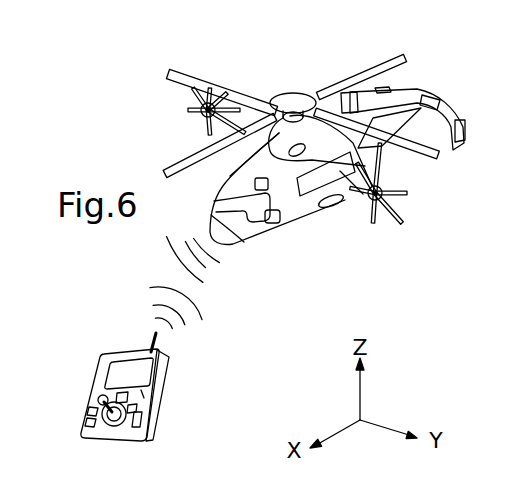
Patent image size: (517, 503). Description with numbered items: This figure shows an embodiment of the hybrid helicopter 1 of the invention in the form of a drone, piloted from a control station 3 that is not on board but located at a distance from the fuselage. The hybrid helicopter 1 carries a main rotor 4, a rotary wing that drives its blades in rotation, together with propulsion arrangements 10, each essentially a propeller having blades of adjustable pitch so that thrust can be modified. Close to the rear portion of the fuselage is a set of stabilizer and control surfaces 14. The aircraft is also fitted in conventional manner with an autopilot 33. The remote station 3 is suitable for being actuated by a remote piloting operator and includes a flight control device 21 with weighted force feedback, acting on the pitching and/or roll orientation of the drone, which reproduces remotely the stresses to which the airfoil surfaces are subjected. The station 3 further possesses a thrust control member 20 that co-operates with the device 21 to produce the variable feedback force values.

The hybrid helicopter 1 is at (355, 217).
The control station 3 is at (156, 360).
The main rotor 4 is at (237, 74).
The propulsion arrangement 10 is at (185, 128).
The set of stabilizer and control surfaces 14 is at (438, 87).
The thrust control member 20 is at (159, 403).
The flight control device 21 is at (88, 387).
The autopilot 33 is at (279, 224).